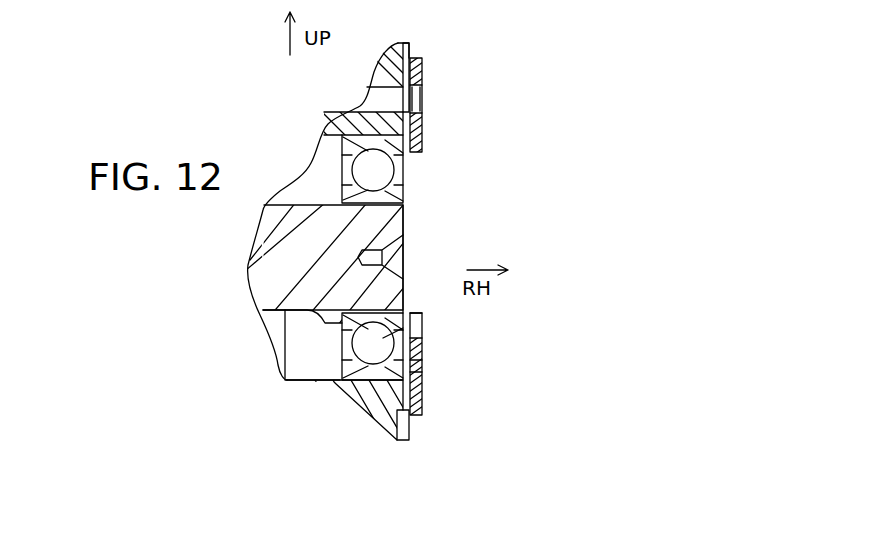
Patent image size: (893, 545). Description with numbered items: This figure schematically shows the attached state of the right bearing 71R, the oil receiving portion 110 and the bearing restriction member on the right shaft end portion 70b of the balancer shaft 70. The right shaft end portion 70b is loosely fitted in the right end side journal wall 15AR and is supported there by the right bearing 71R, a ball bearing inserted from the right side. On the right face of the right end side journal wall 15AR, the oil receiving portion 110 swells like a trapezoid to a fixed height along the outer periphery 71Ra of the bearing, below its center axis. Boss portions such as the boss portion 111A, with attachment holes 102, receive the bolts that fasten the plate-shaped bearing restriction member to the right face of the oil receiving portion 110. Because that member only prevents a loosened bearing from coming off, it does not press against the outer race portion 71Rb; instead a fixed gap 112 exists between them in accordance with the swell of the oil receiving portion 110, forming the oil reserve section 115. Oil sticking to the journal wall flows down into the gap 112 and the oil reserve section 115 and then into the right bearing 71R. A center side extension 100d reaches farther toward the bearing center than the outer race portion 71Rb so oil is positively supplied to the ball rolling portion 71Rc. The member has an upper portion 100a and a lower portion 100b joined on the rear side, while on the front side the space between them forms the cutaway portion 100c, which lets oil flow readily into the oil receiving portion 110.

The balancer shaft 70 is at (290, 380).
The right shaft end portion 70b is at (365, 222).
The right bearing 71R is at (329, 357).
The outer periphery 71Ra is at (422, 118).
The outer race portion 71Rb is at (398, 147).
The ball rolling portion 71Rc is at (400, 340).
The right end side journal wall 15AR is at (405, 48).
The upper portion 100a is at (509, 103).
The lower portion 100b is at (509, 373).
The cutaway portion 100c is at (447, 218).
The center side extension 100d is at (443, 355).
The boss portion 111A is at (420, 72).
The attachment hole 102 is at (422, 96).
The oil receiving portion 110 is at (414, 396).
The gap 112 is at (422, 371).
The oil reserve section 115 is at (422, 380).